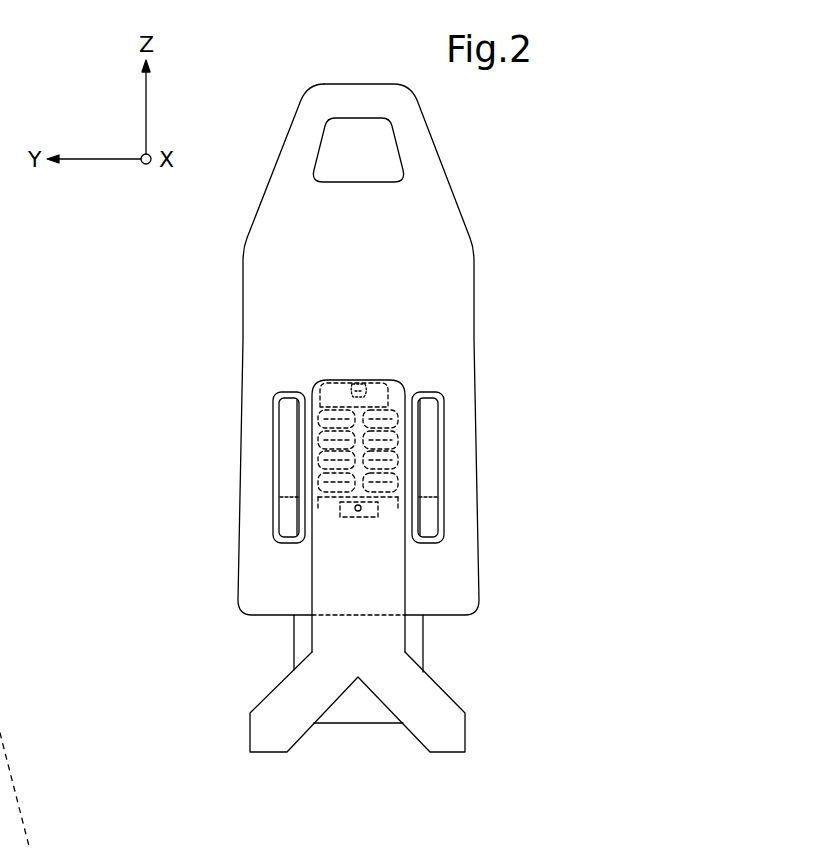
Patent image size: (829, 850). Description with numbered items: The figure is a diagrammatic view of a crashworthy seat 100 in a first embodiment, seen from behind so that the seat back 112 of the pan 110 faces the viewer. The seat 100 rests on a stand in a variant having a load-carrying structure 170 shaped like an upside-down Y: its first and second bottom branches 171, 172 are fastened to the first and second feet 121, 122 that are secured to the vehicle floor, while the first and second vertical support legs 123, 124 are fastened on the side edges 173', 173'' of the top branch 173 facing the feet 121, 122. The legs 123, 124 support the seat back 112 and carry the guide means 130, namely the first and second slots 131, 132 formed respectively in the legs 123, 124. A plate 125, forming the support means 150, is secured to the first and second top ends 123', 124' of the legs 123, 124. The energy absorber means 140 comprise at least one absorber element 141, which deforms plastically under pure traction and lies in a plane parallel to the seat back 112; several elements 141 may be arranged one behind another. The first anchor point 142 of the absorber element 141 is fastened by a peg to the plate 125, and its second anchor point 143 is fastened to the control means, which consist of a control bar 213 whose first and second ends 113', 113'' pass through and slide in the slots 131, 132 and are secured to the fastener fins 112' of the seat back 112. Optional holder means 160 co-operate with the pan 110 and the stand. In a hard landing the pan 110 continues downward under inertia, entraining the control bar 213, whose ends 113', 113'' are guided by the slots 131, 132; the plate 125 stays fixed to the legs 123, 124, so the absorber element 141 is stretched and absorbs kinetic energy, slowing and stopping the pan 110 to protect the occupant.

The crashworthy seat 100 is at (172, 271).
The pan 110 is at (275, 114).
The seat back 112 is at (377, 349).
The fastener fins 112' is at (359, 461).
The first end of control bar 113' is at (232, 528).
The second end of control bar 113'' is at (498, 489).
The first foot 121 is at (288, 741).
The second foot 122 is at (467, 720).
The first vertical support leg 123 is at (239, 596).
The first top end 123' is at (248, 446).
The second vertical support leg 124 is at (477, 573).
The second top end 124' is at (473, 446).
The plate 125 is at (373, 380).
The guide means 130 is at (392, 523).
The first slot 131 is at (300, 558).
The second slot 132 is at (416, 552).
The energy absorber means 140 is at (320, 390).
The absorber element 141 is at (391, 380).
The first anchor point 142 is at (349, 397).
The second anchor point 143 is at (363, 497).
The support means 150 is at (384, 364).
The holder means 160 is at (450, 635).
The load-carrying structure 170 is at (296, 650).
The first bottom branch 171 is at (300, 738).
The second bottom branch 172 is at (445, 727).
The top branch 173 is at (451, 666).
The first side edge 173' is at (237, 631).
The second side edge 173'' is at (482, 611).
The control bar 213 is at (273, 497).